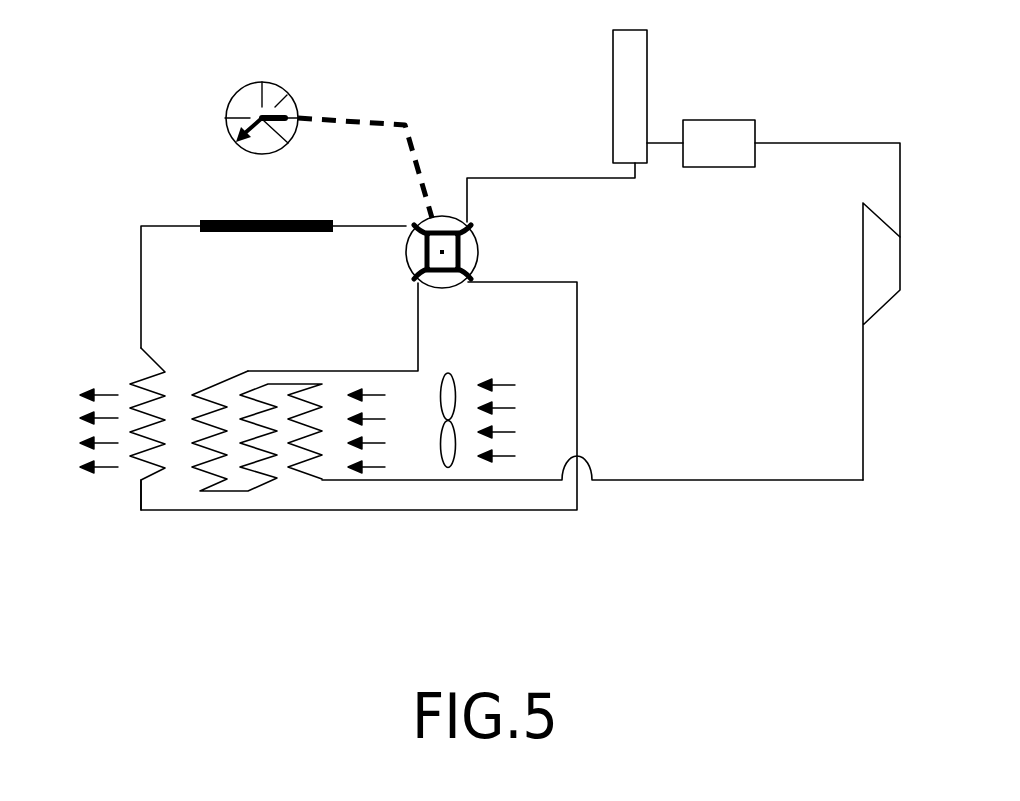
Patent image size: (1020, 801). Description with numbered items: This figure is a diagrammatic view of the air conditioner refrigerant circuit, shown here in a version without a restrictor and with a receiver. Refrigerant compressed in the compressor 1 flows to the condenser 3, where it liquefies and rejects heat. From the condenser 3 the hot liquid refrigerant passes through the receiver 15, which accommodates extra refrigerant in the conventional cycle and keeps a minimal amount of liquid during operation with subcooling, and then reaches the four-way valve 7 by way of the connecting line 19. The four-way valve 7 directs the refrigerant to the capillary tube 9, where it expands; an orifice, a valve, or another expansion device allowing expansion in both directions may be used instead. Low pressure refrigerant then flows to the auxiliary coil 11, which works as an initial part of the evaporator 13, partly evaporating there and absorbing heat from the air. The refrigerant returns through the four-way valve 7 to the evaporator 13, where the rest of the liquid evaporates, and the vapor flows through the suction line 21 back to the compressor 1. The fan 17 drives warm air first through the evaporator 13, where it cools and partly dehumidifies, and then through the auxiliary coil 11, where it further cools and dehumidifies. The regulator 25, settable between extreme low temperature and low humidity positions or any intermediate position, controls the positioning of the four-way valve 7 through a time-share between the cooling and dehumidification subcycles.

The compressor 1 is at (880, 282).
The condenser 3 is at (718, 143).
The four-way valve 7 is at (455, 220).
The capillary tube 9 is at (257, 230).
The auxiliary coil 11 is at (142, 397).
The evaporator 13 is at (247, 418).
The restrictor 15 is at (633, 125).
The fan 17 is at (448, 373).
The refrigerant pipe 19 is at (490, 178).
The suction line 21 is at (657, 486).
The regulator 25 is at (245, 105).